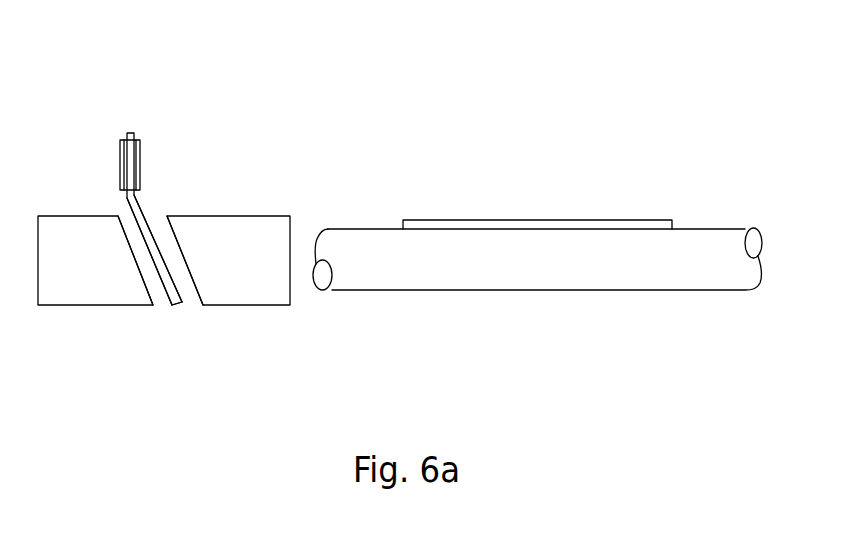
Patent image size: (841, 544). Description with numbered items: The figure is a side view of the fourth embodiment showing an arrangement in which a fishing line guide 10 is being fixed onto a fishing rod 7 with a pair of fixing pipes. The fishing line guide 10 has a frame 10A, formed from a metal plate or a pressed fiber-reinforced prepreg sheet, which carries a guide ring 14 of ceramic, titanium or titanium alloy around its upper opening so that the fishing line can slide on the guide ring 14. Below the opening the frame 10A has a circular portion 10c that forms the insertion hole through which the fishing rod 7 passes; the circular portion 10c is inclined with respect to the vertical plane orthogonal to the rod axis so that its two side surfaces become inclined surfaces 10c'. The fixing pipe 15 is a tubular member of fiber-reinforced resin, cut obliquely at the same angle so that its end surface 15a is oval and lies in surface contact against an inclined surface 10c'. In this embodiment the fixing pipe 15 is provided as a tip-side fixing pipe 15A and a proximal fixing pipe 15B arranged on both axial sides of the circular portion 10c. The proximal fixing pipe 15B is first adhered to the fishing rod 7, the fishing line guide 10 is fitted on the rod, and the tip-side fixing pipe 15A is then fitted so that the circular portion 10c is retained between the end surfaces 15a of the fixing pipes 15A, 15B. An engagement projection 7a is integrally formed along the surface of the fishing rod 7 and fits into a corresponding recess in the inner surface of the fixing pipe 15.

The fishing line guide 10 is at (151, 108).
The frame 10A is at (128, 132).
The guide ring 14 is at (120, 154).
The inclined surface 10c' is at (153, 280).
The circular portion 10c is at (194, 347).
The fixing pipe 15 is at (181, 254).
The tip-side fixing pipe 15A is at (98, 293).
The proximal fixing pipe 15B is at (216, 228).
The end surface 15a is at (130, 243).
The fishing rod 7 is at (372, 238).
The engagement projection 7a is at (530, 221).